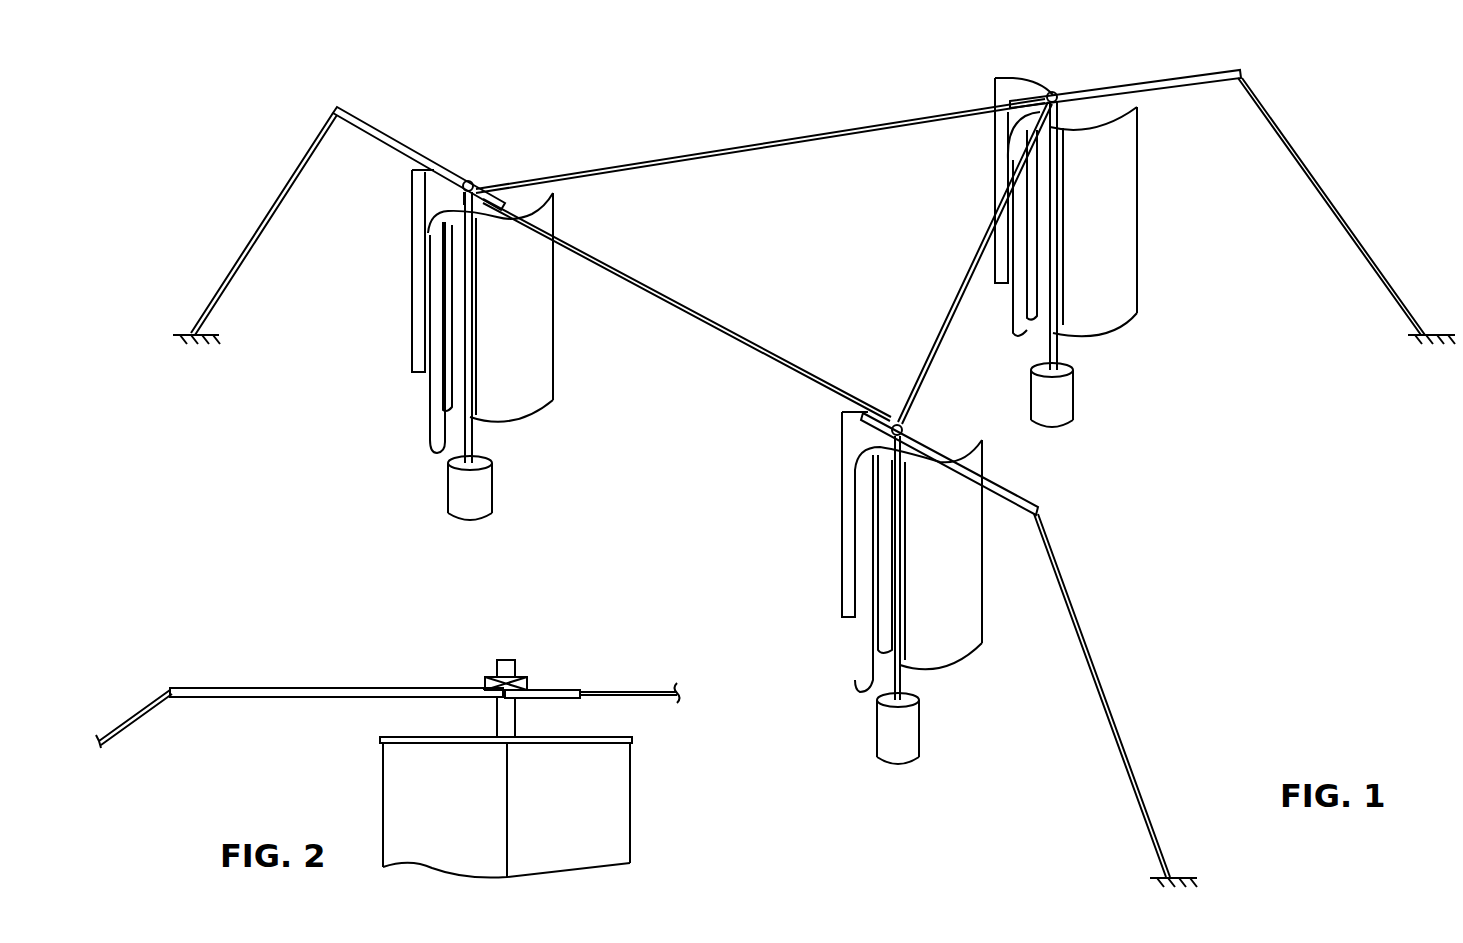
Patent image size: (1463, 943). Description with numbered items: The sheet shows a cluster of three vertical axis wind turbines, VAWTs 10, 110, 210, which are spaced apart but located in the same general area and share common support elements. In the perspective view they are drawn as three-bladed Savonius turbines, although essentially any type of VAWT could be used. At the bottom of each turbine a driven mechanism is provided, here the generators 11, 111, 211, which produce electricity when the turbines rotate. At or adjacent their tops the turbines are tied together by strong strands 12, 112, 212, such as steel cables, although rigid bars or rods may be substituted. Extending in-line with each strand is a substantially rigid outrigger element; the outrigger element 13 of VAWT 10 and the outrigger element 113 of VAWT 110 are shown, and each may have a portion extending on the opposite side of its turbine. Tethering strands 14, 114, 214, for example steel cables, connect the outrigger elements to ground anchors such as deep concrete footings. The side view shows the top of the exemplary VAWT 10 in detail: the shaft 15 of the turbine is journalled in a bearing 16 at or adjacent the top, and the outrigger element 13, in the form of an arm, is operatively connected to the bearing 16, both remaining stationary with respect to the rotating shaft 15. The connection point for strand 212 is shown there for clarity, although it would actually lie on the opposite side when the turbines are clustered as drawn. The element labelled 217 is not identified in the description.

In FIG. 1, the VAWT 10 is at (380, 358).
In FIG. 2, the VAWT 10 is at (655, 812).
In FIG. 1, the generator 11 is at (492, 492).
In FIG. 1, the strand 12 is at (747, 347).
In FIG. 2, the strand 12 is at (650, 690).
In FIG. 1, the outrigger element 13 is at (400, 120).
In FIG. 2, the outrigger element 13 is at (257, 690).
In FIG. 1, the tethering strand 14 is at (278, 195).
In FIG. 2, the tethering strand 14 is at (148, 713).
In FIG. 1, the shaft 15 is at (472, 435).
In FIG. 2, the shaft 15 is at (505, 660).
In FIG. 2, the bearing 16 is at (530, 678).
In FIG. 1, the VAWT 110 is at (815, 556).
In FIG. 1, the generator 111 is at (913, 733).
In FIG. 1, the strand 112 is at (942, 337).
In FIG. 1, the outrigger element 113 is at (940, 452).
In FIG. 1, the tethering strand 114 is at (1080, 633).
In FIG. 1, the VAWT 210 is at (1168, 348).
In FIG. 1, the generator 211 is at (1067, 392).
In FIG. 1, the strand 212 is at (798, 138).
In FIG. 2, the strand 212 is at (483, 690).
In FIG. 1, the tethering strand 214 is at (1297, 153).
In FIG. 1, the support arm of third turbine 217 is at (1175, 80).